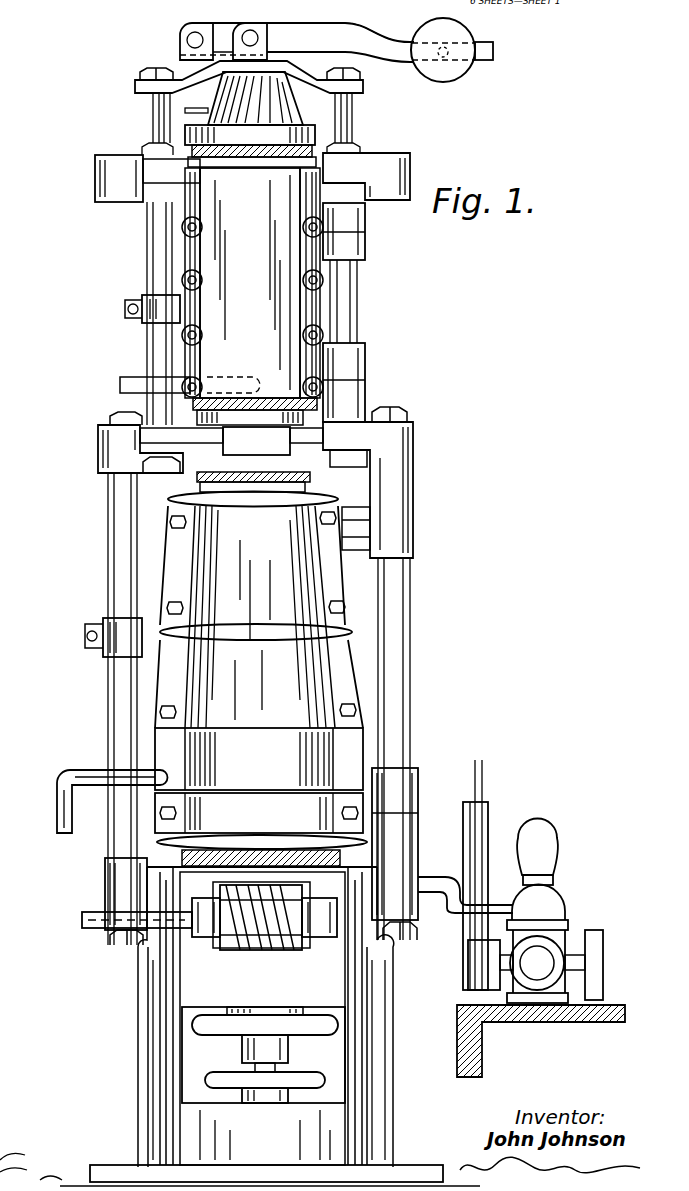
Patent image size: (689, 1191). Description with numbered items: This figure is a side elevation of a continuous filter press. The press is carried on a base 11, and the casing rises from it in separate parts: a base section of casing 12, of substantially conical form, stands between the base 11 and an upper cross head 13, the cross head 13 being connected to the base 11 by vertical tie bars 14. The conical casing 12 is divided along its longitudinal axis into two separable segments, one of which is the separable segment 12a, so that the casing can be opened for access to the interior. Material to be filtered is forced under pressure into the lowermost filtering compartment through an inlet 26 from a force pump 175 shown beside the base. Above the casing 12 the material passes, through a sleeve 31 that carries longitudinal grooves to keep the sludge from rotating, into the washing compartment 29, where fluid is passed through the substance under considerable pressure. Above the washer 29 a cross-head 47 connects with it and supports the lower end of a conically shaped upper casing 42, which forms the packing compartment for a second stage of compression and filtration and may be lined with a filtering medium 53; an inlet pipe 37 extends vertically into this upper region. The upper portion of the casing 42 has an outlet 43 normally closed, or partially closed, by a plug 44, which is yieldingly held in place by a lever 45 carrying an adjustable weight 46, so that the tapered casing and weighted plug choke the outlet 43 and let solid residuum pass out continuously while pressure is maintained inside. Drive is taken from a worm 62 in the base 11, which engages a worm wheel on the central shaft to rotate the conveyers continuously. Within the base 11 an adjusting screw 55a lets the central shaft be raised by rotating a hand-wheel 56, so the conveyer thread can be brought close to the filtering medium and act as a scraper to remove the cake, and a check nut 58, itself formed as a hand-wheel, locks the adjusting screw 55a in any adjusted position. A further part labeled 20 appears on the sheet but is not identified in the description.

The plug 44 is at (258, 35).
The lever 45 is at (387, 49).
The adjustable weight 46 is at (470, 34).
The inlet pipe 37 is at (185, 112).
The upper casing 42 is at (255, 98).
The filtering medium 53 is at (275, 88).
The cross-head 47 is at (333, 165).
The outlet 43 is at (293, 200).
The washing compartment 29 is at (220, 296).
The upper cross head 13 is at (378, 430).
The sleeve 31 is at (210, 442).
The vertical tie bars 14 is at (120, 570).
The base section of casing 12 is at (259, 600).
The separable segment 12a is at (313, 688).
The lever handle 20 is at (67, 780).
The inlet 26 is at (434, 882).
The force pump 175 is at (547, 903).
The worm 62 is at (276, 950).
The base 11 is at (387, 980).
The hand-wheel 56 is at (330, 1023).
The check nut 58 is at (325, 1066).
The adjusting screw 55a is at (247, 1070).